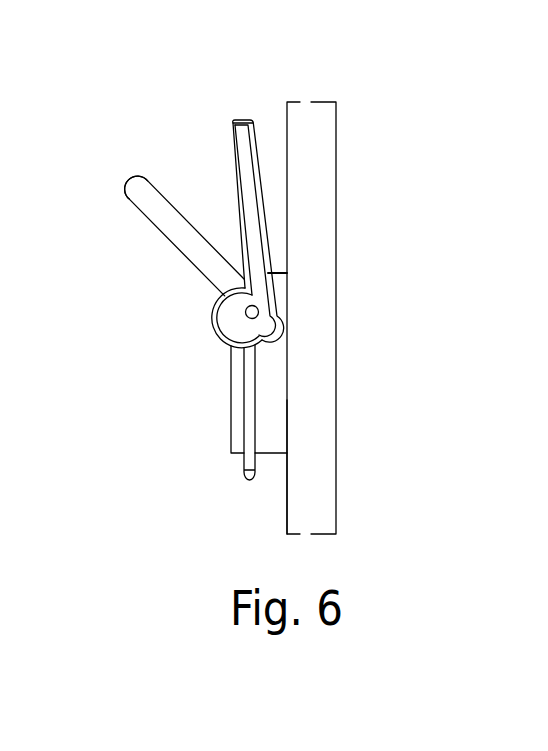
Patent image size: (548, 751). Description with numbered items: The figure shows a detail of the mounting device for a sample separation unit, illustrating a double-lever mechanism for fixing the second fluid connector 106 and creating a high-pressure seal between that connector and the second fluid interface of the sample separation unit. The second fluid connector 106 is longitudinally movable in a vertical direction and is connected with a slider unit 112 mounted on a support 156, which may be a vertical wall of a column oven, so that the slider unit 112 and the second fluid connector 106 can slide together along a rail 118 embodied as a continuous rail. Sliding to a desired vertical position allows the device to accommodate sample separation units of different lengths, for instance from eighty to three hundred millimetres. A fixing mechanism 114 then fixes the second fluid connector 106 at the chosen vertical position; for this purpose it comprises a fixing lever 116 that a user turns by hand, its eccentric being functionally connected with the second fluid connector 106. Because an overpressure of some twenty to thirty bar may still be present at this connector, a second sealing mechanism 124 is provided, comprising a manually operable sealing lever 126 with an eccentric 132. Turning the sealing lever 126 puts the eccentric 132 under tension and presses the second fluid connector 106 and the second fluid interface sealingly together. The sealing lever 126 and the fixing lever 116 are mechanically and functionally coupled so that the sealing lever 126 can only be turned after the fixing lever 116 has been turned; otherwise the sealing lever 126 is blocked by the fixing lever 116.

The second fluid connector 106 is at (243, 462).
The slider unit 112 is at (288, 400).
The fixing mechanism 114 is at (127, 187).
The fixing lever 116 is at (138, 188).
The rail 118 is at (288, 323).
The second sealing mechanism 124 is at (247, 117).
The sealing lever 126 is at (235, 150).
The eccentric 132 is at (246, 314).
The support 156 is at (317, 178).